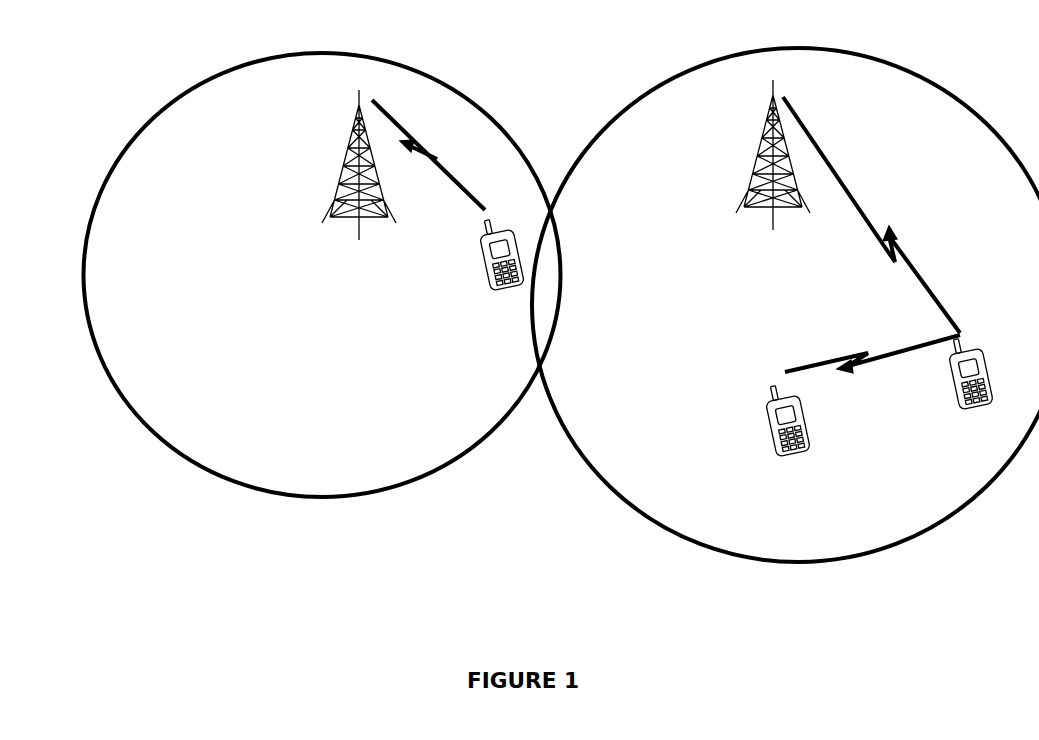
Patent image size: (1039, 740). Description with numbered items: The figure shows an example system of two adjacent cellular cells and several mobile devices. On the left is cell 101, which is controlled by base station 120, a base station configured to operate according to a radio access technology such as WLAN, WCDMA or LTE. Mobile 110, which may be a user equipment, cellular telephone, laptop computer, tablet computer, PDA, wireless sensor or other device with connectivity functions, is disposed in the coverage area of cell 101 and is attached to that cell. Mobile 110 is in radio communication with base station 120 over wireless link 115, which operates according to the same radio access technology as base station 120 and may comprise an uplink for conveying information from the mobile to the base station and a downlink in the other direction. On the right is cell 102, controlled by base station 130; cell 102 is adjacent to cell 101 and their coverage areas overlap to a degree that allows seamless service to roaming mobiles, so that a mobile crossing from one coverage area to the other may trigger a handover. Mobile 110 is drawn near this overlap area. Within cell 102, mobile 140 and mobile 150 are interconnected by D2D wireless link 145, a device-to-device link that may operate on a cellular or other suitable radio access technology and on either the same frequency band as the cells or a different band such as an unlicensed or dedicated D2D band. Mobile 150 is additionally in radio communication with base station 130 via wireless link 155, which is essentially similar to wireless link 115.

The cell 101 is at (322, 276).
The cell 102 is at (785, 305).
The mobile 110 is at (501, 263).
The wireless link 115 is at (428, 155).
The base station 120 is at (359, 169).
The base station 130 is at (766, 166).
The mobile 140 is at (787, 430).
The D2D wireless link 145 is at (872, 354).
The mobile 150 is at (970, 386).
The wireless link 155 is at (871, 215).